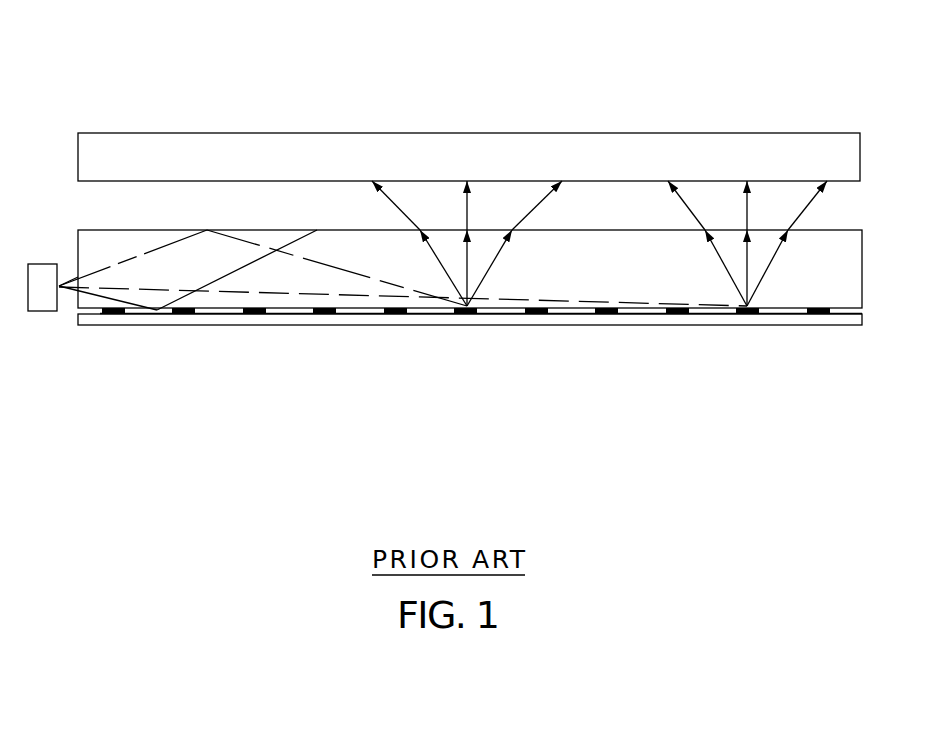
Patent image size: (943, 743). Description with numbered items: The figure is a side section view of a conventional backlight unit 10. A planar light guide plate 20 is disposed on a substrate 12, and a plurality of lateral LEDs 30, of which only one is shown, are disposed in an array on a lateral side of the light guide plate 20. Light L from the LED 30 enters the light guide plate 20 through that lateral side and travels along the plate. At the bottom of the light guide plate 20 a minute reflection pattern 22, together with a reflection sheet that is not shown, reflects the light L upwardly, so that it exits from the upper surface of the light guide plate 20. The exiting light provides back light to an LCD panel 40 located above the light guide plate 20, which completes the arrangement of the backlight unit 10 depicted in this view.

The backlight unit 10 is at (306, 30).
The LCD panel 40 is at (715, 157).
The light guide plate 20 is at (792, 292).
The minute reflection pattern 22 is at (260, 313).
The substrate 12 is at (653, 323).
The lateral LED 30 is at (47, 312).
The light L is at (355, 275).